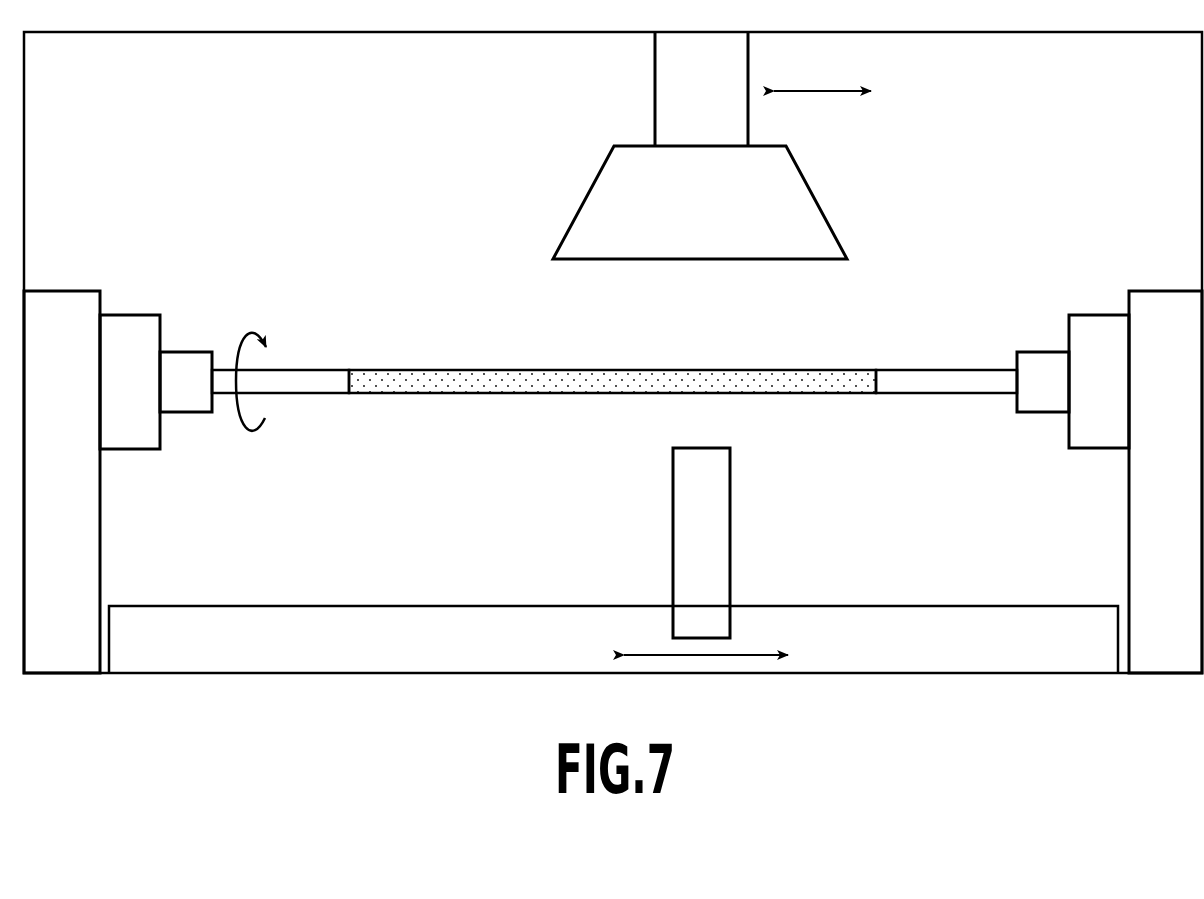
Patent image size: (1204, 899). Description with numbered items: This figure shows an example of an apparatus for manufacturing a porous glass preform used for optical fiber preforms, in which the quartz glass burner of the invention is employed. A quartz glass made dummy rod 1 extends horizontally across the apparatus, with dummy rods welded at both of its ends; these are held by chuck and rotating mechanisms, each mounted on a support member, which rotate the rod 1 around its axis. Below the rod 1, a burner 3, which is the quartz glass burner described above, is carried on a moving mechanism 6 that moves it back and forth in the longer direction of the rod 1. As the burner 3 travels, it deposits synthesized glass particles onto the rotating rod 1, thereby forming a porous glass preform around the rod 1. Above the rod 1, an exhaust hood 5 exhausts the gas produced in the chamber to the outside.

The quartz glass made dummy rod 1 is at (437, 395).
The burner 3 is at (730, 512).
The exhaust hood 5 is at (803, 192).
The moving mechanism 6 is at (947, 606).